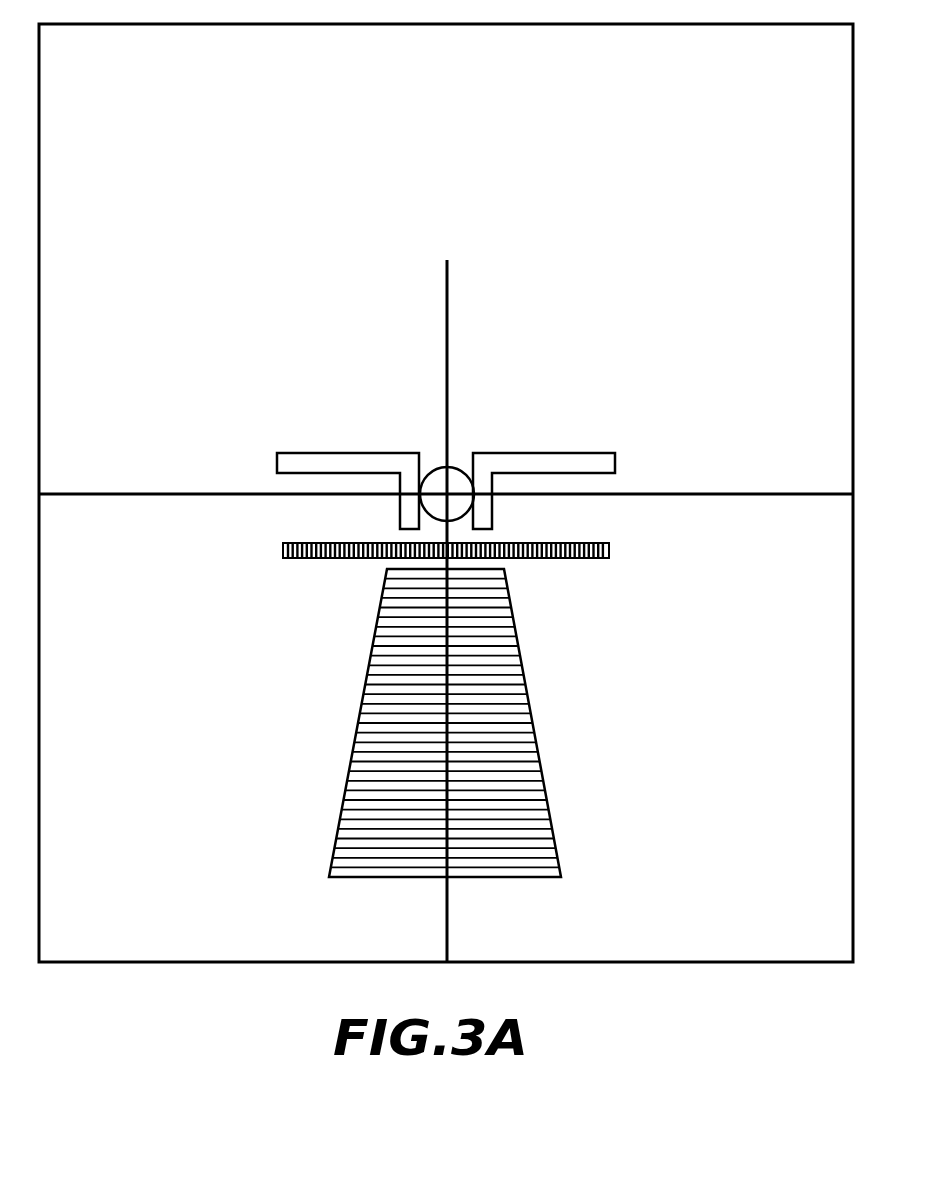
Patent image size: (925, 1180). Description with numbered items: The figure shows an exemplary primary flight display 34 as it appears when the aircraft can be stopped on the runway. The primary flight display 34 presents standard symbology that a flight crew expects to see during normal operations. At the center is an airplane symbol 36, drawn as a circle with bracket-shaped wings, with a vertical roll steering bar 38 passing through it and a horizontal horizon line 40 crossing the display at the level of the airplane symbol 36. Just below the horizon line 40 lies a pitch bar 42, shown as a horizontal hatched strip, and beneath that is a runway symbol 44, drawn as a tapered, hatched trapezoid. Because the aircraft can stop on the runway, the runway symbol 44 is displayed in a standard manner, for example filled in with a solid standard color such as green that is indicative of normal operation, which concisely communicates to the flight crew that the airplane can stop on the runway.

The primary flight display 34 is at (650, 143).
The airplane symbol 36 is at (510, 432).
The roll steering bar 38 is at (448, 287).
The horizon line 40 is at (692, 494).
The pitch bar 42 is at (650, 557).
The runway symbol 44 is at (578, 687).